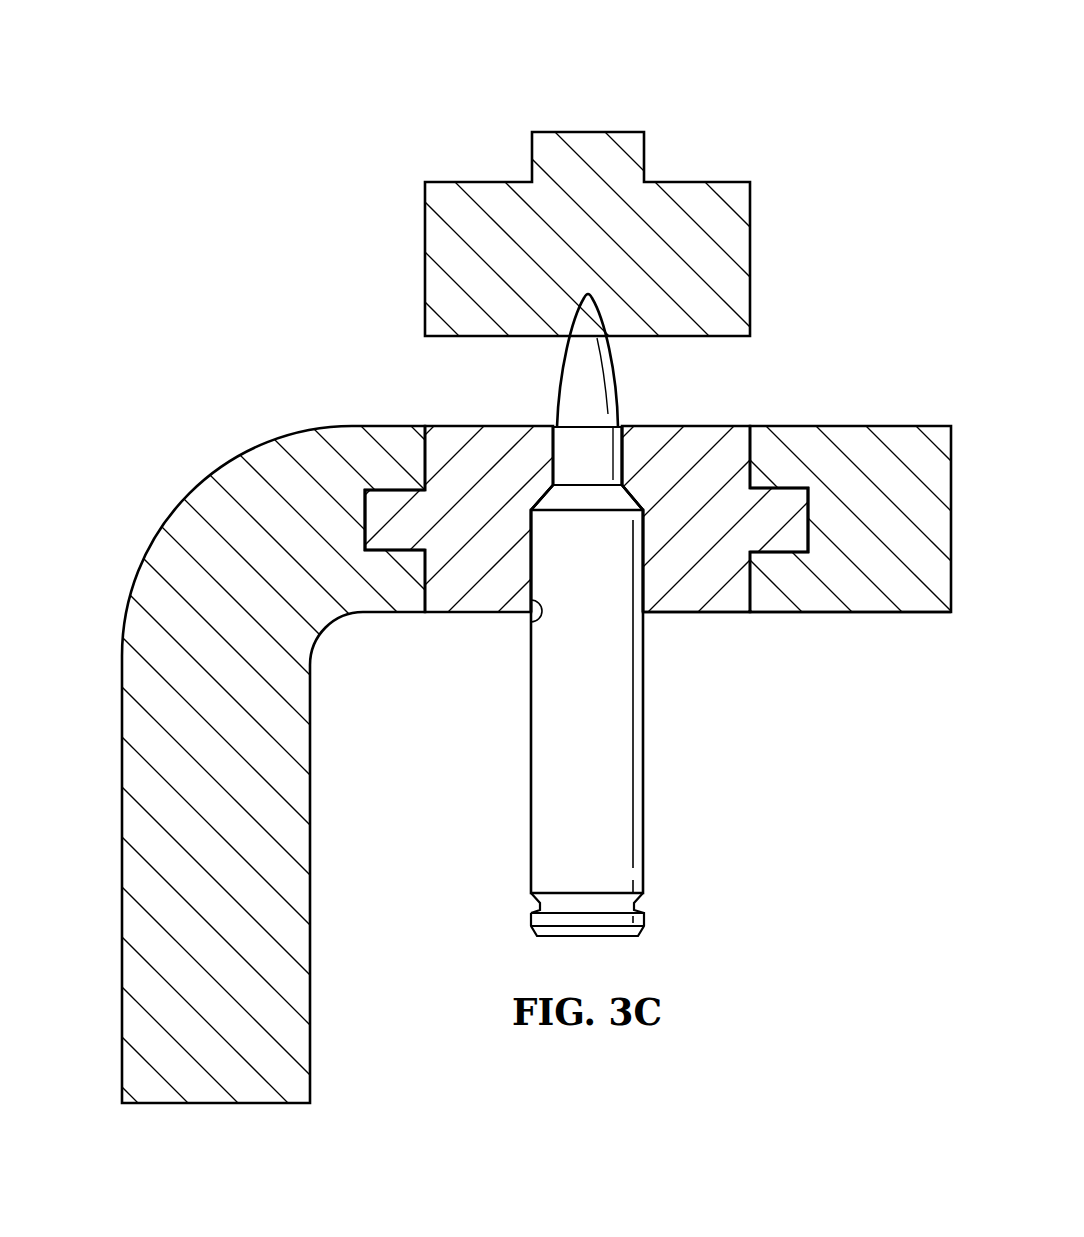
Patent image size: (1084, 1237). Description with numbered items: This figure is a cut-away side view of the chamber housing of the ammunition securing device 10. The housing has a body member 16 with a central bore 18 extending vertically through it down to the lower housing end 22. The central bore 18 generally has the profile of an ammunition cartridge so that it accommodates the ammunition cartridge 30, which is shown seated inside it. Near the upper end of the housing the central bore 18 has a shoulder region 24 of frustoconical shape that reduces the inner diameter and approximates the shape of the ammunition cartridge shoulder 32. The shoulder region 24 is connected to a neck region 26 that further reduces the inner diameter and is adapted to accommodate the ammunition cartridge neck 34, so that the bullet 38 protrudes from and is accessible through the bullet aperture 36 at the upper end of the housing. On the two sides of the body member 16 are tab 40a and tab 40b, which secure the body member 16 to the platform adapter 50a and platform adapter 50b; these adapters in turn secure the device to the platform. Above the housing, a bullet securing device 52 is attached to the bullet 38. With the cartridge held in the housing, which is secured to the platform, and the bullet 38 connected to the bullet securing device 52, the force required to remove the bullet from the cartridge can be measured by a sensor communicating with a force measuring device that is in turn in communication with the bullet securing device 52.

The ammunition securing device 10 is at (452, 97).
The body member 16 is at (611, 525).
The central bore 18 is at (531, 623).
The lower housing end 22 is at (727, 617).
The shoulder region 24 is at (532, 527).
The neck region 26 is at (623, 463).
The ammunition cartridge 30 is at (566, 605).
The ammunition cartridge shoulder 32 is at (603, 505).
The ammunition cartridge neck 34 is at (588, 475).
The bullet aperture 36 is at (546, 420).
The bullet 38 is at (592, 325).
The tab 40a is at (377, 509).
The tab 40b is at (797, 538).
The platform adapter 50a is at (130, 867).
The platform adapter 50b is at (903, 438).
The bullet securing device 52 is at (683, 182).